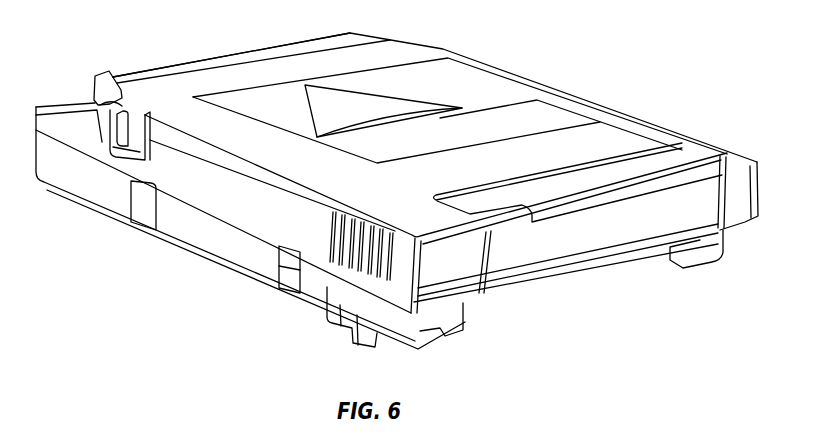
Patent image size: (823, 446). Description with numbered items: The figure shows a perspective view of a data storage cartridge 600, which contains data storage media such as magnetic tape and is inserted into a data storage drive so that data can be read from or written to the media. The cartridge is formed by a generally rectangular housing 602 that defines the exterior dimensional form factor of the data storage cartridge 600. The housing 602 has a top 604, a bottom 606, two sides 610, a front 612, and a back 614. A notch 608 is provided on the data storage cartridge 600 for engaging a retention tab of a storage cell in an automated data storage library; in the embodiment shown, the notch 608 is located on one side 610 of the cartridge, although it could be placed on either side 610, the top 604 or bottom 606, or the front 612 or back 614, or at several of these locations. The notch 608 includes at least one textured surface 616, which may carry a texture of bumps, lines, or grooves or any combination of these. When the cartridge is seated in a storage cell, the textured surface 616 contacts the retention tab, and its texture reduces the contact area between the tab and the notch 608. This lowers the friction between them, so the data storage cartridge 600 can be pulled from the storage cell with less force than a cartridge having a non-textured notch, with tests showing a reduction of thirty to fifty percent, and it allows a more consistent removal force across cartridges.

The data storage cartridge 600 is at (582, 74).
The housing 602 is at (637, 137).
The top 604 is at (410, 53).
The bottom 606 is at (260, 287).
The notch 608 is at (136, 136).
The side 610 is at (728, 146).
The front 612 is at (582, 250).
The back 614 is at (248, 47).
The textured surface 616 is at (100, 72).